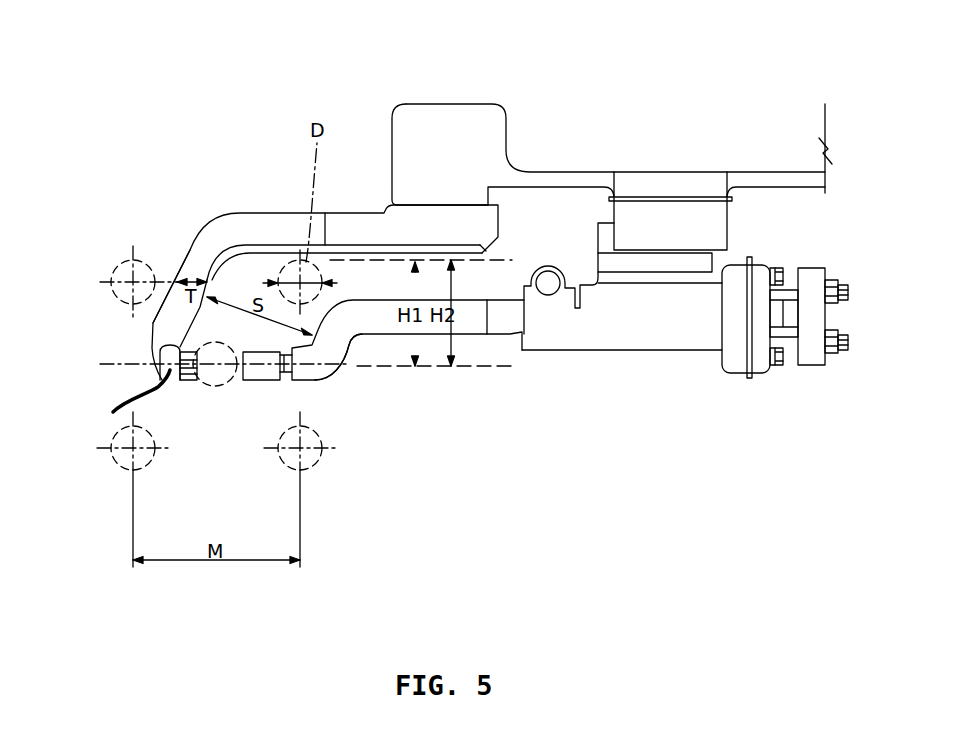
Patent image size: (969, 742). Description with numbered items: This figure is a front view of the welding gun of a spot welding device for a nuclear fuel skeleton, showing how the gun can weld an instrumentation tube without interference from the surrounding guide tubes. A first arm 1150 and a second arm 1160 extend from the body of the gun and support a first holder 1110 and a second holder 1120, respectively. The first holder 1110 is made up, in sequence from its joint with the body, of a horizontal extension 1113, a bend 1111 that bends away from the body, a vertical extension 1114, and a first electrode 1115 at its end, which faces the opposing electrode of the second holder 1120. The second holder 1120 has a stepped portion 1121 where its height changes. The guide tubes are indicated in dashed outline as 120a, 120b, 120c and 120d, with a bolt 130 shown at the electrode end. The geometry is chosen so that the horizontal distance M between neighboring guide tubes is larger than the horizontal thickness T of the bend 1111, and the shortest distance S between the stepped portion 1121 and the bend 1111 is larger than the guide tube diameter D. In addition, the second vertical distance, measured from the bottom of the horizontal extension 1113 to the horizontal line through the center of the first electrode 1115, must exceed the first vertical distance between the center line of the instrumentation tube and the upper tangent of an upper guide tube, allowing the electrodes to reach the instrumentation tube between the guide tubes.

The first holder 1110 is at (187, 165).
The bend 1111 is at (193, 257).
The horizontal extension 1113 is at (243, 213).
The vertical extension 1114 is at (115, 399).
The first electrode 1115 is at (172, 368).
The second holder 1120 is at (390, 352).
The stepped portion 1121 is at (343, 353).
The first arm 1150 is at (568, 103).
The second arm 1160 is at (682, 338).
The bolt 130 is at (207, 387).
The first mounting hole 120a is at (121, 467).
The second mounting hole 120b is at (313, 464).
The third mounting hole 120c is at (120, 300).
The fourth mounting hole 120d is at (283, 266).